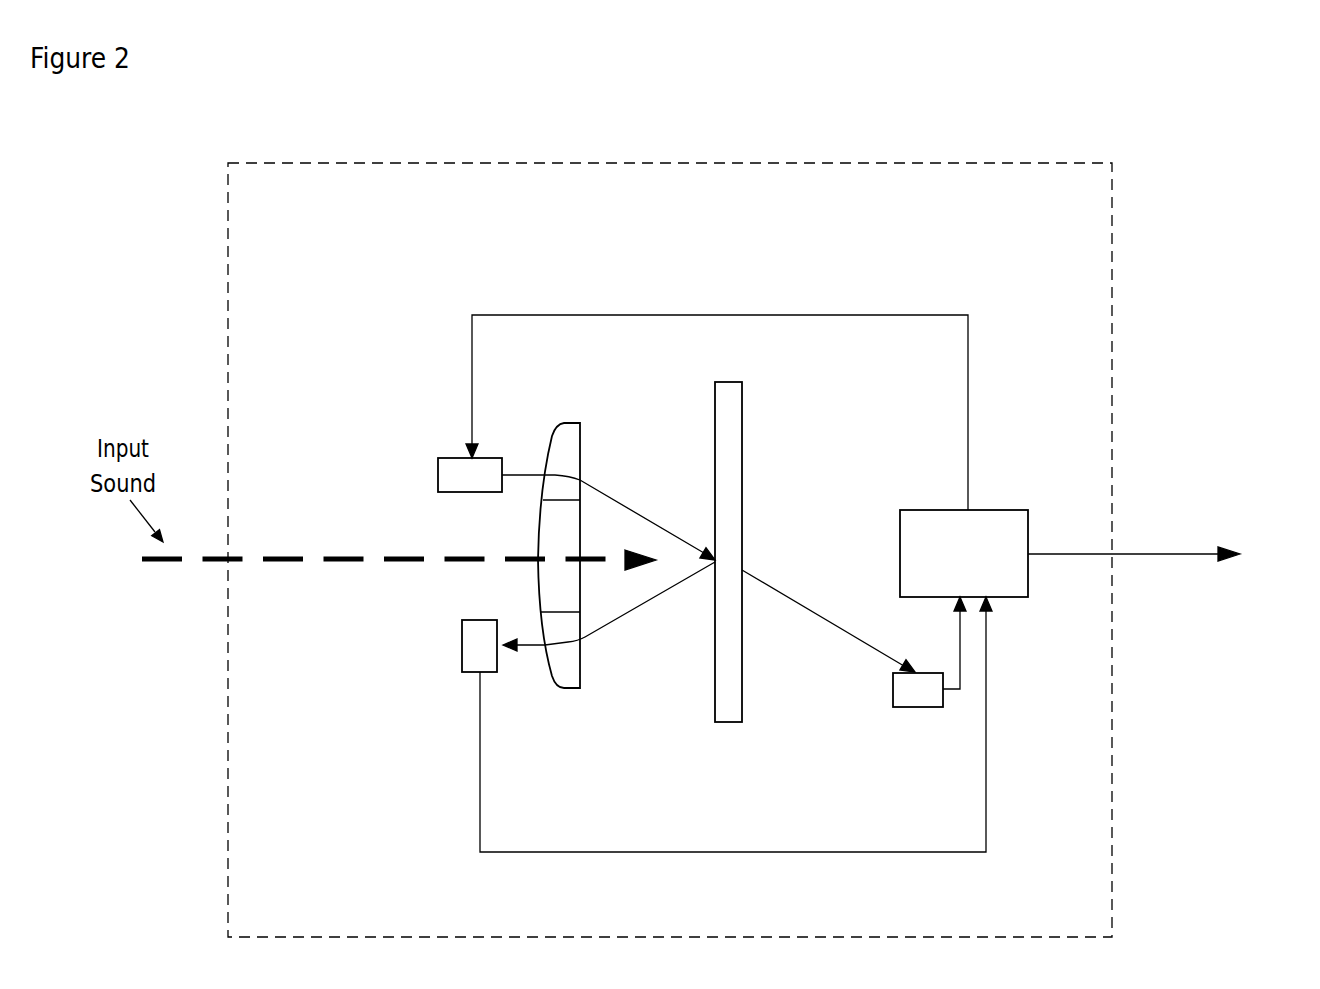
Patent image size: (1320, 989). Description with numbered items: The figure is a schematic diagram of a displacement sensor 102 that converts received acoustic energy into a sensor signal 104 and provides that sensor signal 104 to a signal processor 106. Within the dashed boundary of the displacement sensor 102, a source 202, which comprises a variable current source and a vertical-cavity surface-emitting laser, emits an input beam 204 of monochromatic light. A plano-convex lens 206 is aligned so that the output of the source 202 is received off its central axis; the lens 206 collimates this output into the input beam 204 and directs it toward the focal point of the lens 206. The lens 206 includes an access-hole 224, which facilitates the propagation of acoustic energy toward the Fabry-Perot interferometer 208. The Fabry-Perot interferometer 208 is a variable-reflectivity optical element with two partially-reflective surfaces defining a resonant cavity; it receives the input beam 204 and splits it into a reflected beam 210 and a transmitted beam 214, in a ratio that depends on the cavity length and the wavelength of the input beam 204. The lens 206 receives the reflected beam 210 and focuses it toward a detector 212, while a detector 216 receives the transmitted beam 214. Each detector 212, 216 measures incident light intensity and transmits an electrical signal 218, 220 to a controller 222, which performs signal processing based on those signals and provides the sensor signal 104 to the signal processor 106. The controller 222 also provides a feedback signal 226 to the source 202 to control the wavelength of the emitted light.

The displacement sensor 102 is at (502, 203).
The sensor signal 104 is at (1158, 509).
The signal processor 106 is at (1265, 609).
The source 202 is at (430, 473).
The input beam 204 is at (608, 506).
The lens 206 is at (599, 536).
The Fabry-Perot interferometer 208 is at (780, 552).
The reflected beam 210 is at (609, 624).
The detector 212 is at (423, 679).
The transmitted beam 214 is at (828, 628).
The detector 216 is at (881, 713).
The electrical signal 218 is at (774, 724).
The electrical signal 220 is at (1005, 643).
The controller 222 is at (950, 547).
The access-hole 224 is at (444, 614).
The feedback signal 226 is at (767, 412).